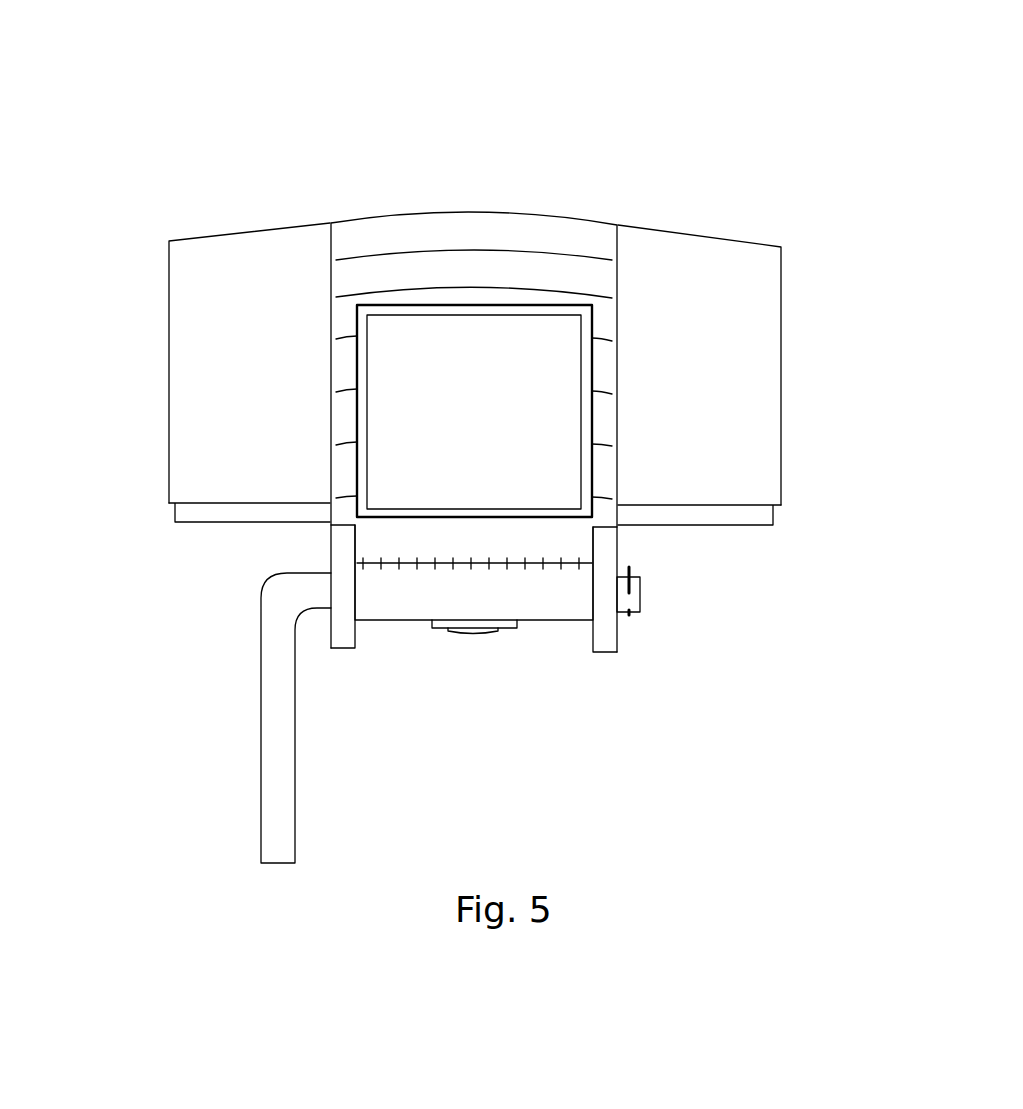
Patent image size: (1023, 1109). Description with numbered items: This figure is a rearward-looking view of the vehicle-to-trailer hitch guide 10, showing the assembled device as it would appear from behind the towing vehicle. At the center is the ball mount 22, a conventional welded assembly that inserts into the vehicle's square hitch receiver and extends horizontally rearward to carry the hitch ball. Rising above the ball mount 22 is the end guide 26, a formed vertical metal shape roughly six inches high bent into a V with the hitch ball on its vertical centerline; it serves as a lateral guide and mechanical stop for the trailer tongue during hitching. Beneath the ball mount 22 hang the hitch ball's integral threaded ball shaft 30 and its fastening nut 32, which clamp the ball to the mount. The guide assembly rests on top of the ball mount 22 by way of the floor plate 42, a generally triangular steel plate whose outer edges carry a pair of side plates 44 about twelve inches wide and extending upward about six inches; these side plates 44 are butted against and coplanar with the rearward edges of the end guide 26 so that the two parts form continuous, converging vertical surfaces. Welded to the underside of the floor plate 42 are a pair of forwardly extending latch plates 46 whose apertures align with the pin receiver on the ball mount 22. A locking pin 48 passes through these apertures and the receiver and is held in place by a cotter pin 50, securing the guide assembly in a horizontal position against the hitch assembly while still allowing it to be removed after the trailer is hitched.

The vehicle-to-trailer hitch guide 10 is at (874, 229).
The ball mount 22 is at (455, 535).
The end guide 26 is at (502, 238).
The threaded ball shaft 30 is at (483, 633).
The fastening nut 32 is at (438, 627).
The floor plate 42 is at (187, 515).
The side plates 44 is at (210, 268).
The latch plates 46 is at (342, 637).
The locking pin 48 is at (268, 660).
The cotter pin 50 is at (632, 568).